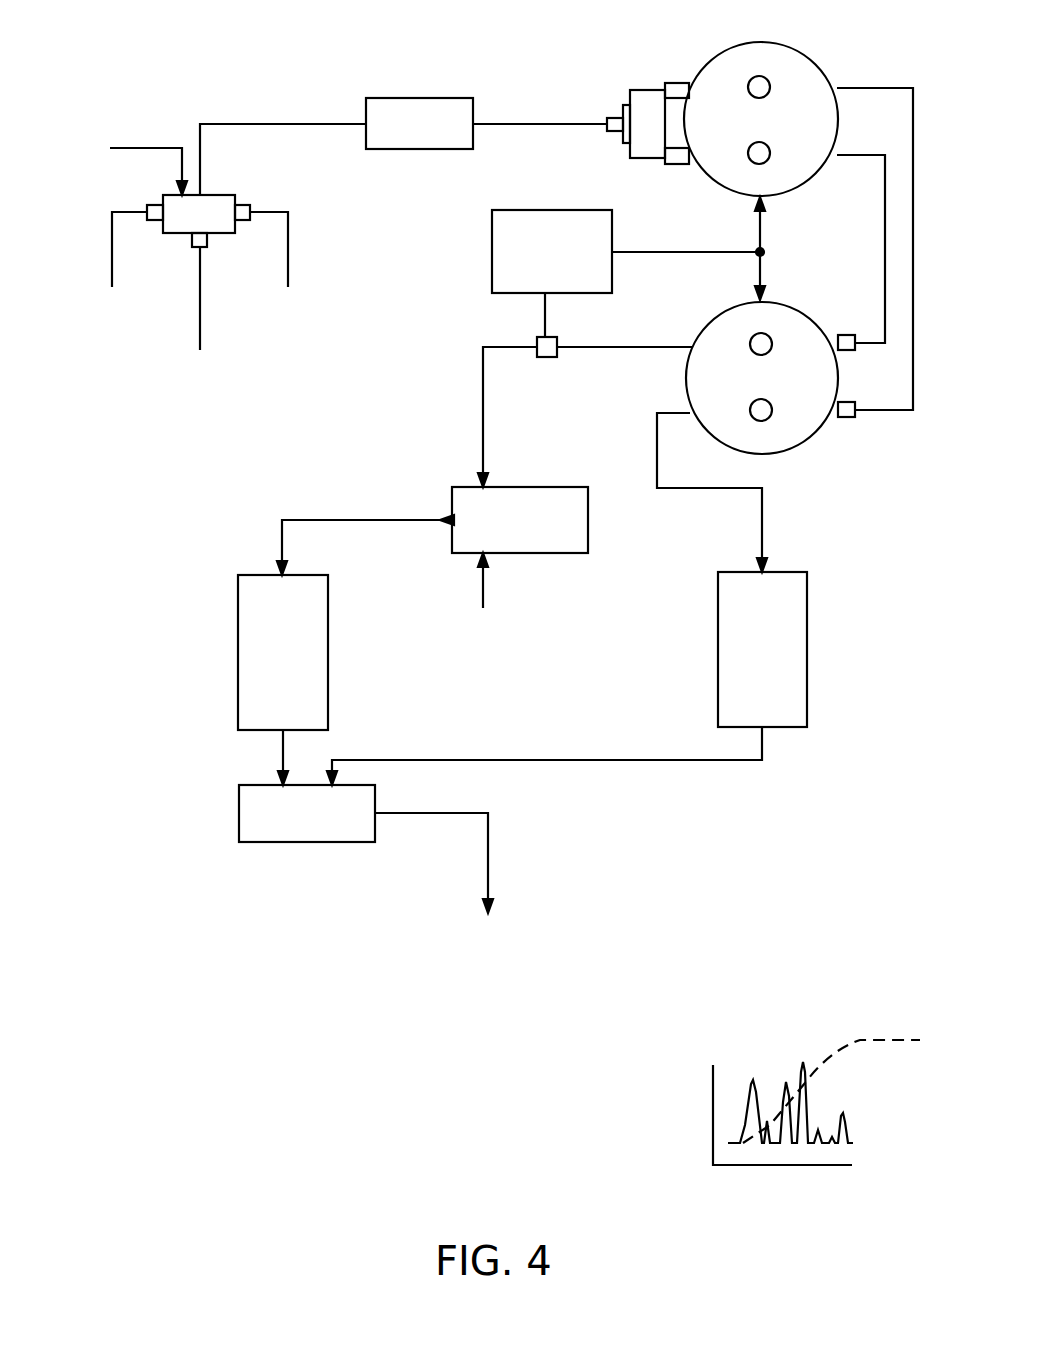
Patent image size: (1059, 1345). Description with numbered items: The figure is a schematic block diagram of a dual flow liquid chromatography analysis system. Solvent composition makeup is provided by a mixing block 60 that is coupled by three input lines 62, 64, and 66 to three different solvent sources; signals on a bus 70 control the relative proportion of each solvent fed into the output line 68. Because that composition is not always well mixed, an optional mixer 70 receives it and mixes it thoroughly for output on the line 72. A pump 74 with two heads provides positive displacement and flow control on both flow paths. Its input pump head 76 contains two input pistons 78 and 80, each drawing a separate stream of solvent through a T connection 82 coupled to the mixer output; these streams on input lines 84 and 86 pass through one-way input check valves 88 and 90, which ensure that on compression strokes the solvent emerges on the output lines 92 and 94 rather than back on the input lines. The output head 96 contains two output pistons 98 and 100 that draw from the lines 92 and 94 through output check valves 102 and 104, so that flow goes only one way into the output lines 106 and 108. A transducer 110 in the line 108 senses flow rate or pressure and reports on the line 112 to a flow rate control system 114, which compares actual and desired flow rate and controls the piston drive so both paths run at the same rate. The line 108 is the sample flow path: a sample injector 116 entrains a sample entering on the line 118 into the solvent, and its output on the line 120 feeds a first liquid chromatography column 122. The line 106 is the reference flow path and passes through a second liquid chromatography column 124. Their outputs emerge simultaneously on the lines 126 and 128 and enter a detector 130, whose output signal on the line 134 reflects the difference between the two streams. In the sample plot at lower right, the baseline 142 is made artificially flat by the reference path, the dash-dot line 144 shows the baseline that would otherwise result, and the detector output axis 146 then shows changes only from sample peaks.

The mixing block 60 is at (215, 195).
The input line 62 is at (112, 242).
The input line 64 is at (200, 270).
The input line 66 is at (288, 240).
The output line 68 is at (330, 124).
The mixer 70 is at (182, 166).
The line 72 is at (548, 124).
The pump 74 is at (791, 236).
The input pump head 76 is at (805, 52).
The input piston 78 is at (748, 92).
The input piston 80 is at (748, 148).
The T connection 82 is at (608, 130).
The input line 84 is at (648, 90).
The input line 86 is at (648, 158).
The one-way input check valve 88 is at (688, 83).
The one-way input check valve 90 is at (690, 164).
The output line 92 is at (860, 88).
The output line 94 is at (868, 158).
The output head 96 is at (805, 440).
The output piston 98 is at (750, 352).
The output piston 100 is at (752, 403).
The output check valve 102 is at (861, 306).
The output check valve 104 is at (838, 417).
The output line 106 is at (657, 436).
The output line 108 is at (645, 347).
The transducer 110 is at (547, 357).
The line 112 is at (545, 318).
The flow rate control system 114 is at (492, 241).
The sample injector 116 is at (565, 553).
The line 118 is at (483, 588).
The line 120 is at (362, 520).
The first liquid chromatography column 122 is at (328, 645).
The second liquid chromatography column 124 is at (807, 635).
The line 126 is at (281, 752).
The line 128 is at (762, 742).
The detector 130 is at (375, 785).
The output signal line 134 is at (480, 813).
The baseline 142 is at (866, 1140).
The dash-dot line 144 is at (900, 1040).
The detector output axis 146 is at (713, 1118).